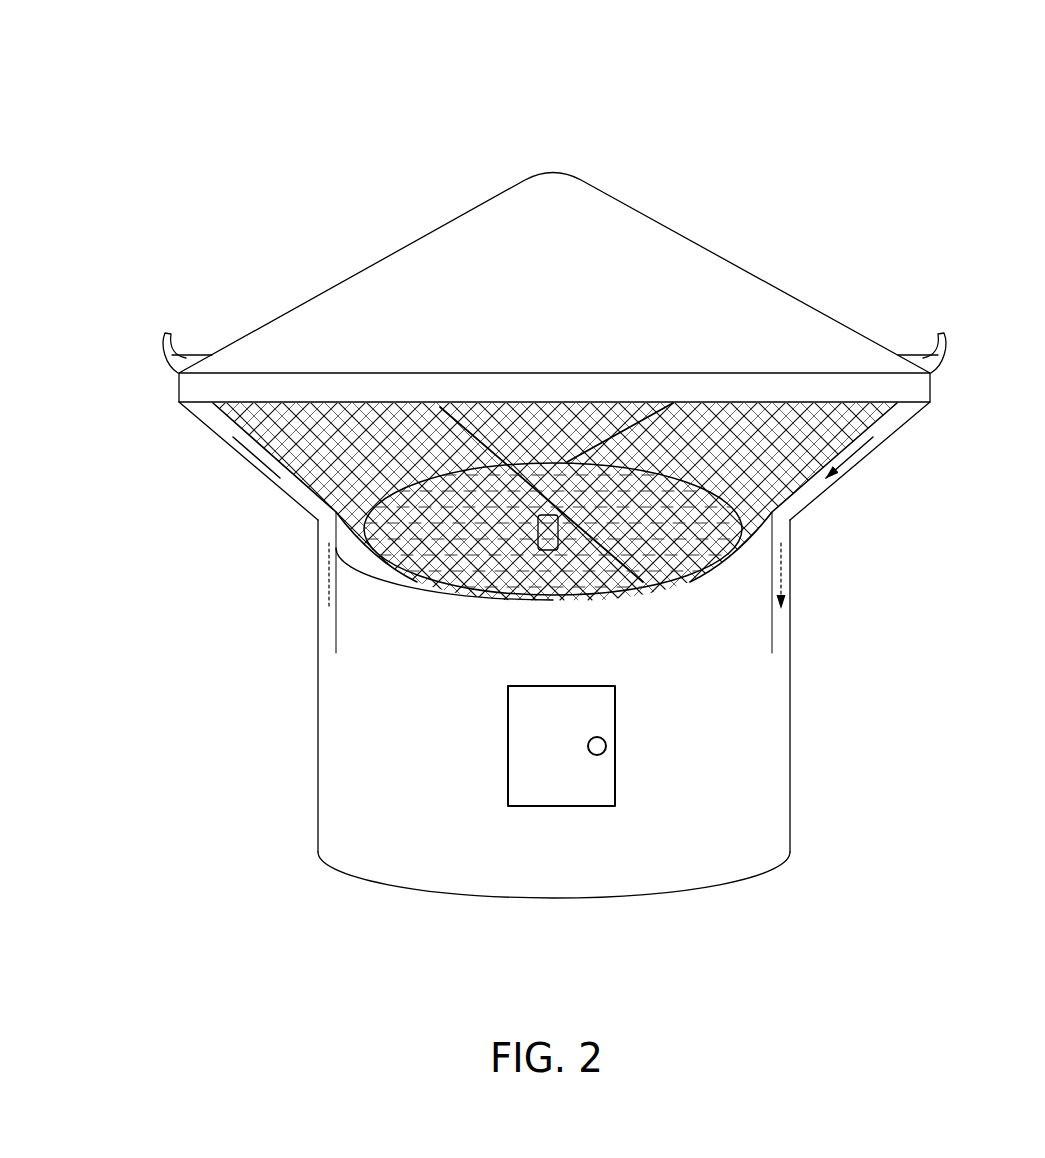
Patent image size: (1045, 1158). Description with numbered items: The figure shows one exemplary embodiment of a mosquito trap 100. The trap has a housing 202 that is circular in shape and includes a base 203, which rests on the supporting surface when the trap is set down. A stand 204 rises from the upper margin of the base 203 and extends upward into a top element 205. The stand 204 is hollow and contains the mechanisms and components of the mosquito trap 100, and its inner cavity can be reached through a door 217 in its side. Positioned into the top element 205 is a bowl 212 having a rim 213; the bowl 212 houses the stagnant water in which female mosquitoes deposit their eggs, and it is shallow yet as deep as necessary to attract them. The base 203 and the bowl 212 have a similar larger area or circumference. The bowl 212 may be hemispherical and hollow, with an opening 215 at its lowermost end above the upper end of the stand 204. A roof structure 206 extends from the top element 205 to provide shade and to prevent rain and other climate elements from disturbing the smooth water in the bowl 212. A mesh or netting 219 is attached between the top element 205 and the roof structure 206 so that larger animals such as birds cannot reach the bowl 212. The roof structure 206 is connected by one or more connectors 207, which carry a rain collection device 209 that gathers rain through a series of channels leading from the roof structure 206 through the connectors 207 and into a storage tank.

The mosquito trap 100 is at (228, 97).
The housing 202 is at (198, 548).
The base 203 is at (312, 847).
The stand 204 is at (305, 670).
The top element 205 is at (713, 570).
The roof structure 206 is at (738, 265).
The connectors 207 is at (242, 472).
The rain collection device 209 is at (175, 330).
The bowl 212 is at (478, 500).
The rim 213 is at (378, 488).
The opening 215 is at (532, 513).
The door 217 is at (492, 757).
The mesh or netting 219 is at (800, 450).